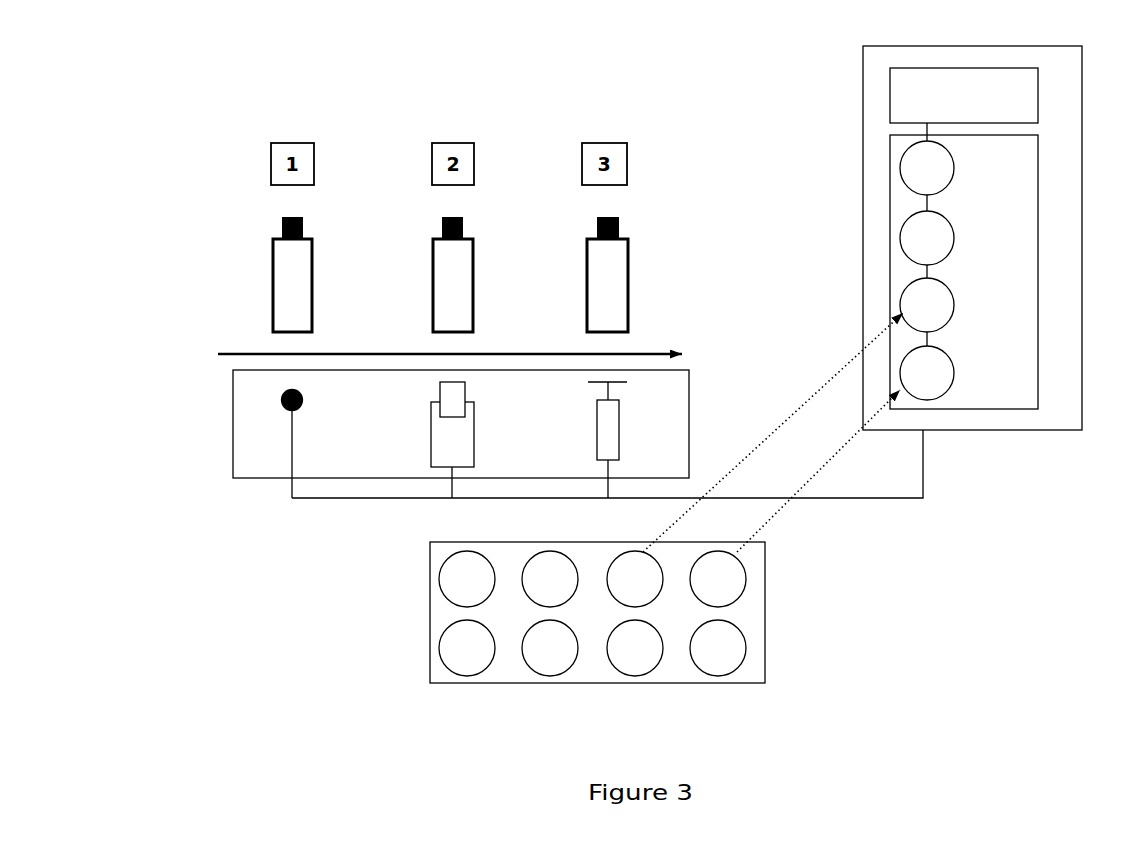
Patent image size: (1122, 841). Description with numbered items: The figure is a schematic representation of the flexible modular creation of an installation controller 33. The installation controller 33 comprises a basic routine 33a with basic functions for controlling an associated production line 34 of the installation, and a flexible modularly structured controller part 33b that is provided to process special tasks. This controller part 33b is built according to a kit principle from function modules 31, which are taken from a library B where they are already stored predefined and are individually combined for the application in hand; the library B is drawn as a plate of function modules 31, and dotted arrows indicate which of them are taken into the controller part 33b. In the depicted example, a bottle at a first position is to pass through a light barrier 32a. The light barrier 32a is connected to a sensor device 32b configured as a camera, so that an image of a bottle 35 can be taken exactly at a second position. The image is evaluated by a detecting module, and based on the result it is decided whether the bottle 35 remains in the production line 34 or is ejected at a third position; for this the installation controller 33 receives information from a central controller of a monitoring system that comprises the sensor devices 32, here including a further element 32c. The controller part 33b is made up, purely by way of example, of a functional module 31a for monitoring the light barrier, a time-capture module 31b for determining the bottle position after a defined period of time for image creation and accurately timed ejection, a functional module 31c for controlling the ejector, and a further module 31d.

The function modules 31 is at (463, 577).
The functional module for monitoring the light barrier 31a is at (952, 168).
The time-capture module 31b is at (953, 238).
The functional module for controlling the ejector 31c is at (952, 305).
The well representation d 31d is at (953, 373).
The sensor devices 32 is at (237, 440).
The light barrier 32a is at (310, 444).
The sensor device 32b is at (481, 440).
The resistive sensor 32c is at (626, 440).
The installation controller 33 is at (878, 68).
The basic routine 33a is at (900, 105).
The flexible modularly structured controller part 33b is at (890, 158).
The production line 34 is at (426, 345).
The bottle 35 is at (273, 258).
The library B is at (760, 650).